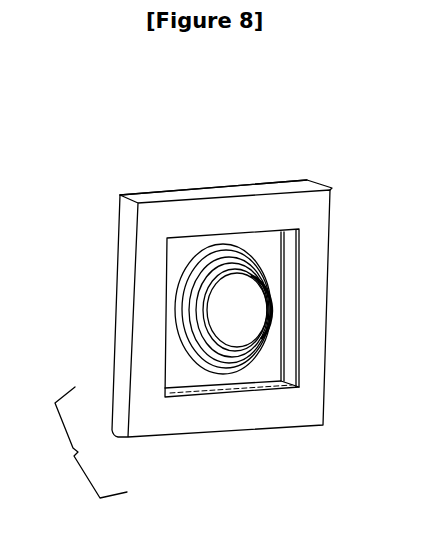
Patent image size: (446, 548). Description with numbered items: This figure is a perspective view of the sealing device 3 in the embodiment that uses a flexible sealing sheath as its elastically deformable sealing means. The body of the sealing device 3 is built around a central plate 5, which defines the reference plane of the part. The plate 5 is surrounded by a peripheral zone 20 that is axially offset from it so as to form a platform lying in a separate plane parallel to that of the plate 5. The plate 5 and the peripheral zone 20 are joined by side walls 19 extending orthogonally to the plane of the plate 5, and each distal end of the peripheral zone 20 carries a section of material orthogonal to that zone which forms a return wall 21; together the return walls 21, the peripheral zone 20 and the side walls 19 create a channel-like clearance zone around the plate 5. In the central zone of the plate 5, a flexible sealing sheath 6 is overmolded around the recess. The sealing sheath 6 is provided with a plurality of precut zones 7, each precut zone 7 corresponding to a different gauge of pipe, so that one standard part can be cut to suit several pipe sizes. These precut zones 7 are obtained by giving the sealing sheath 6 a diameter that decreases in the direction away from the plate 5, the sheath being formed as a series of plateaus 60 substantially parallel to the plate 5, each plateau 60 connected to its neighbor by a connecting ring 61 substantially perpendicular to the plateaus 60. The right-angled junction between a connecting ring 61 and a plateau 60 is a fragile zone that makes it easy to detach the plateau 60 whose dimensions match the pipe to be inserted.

The sealing device 3 is at (73, 452).
The peripheral zone 20 is at (235, 210).
The return wall 21 is at (160, 197).
The plate 5 is at (180, 378).
The side wall 19 is at (287, 350).
The flexible sealing sheath 6 is at (80, 243).
The precut zone 7 is at (200, 318).
The plateau 60 is at (242, 340).
The connecting ring 61 is at (250, 458).